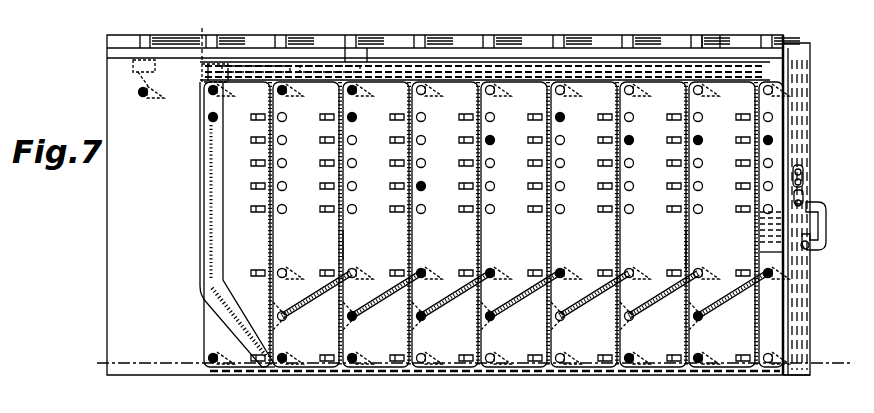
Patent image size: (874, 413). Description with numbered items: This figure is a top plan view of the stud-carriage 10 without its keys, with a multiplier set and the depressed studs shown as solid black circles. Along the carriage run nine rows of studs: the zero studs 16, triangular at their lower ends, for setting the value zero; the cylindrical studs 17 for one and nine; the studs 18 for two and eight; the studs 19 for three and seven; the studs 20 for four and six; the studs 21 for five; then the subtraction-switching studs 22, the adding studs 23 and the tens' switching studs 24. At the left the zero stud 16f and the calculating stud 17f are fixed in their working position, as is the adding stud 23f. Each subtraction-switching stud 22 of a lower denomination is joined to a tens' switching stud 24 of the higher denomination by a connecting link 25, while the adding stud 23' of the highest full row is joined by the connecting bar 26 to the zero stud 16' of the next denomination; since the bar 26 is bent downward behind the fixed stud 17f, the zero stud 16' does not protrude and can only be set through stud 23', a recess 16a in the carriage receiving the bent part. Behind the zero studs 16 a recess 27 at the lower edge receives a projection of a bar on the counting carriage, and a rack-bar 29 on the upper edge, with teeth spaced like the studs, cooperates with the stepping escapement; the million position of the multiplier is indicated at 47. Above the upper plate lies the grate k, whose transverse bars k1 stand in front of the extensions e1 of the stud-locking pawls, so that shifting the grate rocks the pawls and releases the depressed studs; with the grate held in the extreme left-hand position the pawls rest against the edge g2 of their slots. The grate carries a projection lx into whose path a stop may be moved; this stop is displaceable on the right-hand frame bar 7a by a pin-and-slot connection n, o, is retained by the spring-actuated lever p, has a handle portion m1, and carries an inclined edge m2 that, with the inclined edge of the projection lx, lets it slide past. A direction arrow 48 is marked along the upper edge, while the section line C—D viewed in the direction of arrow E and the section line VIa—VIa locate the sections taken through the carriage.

The zero stud 16' is at (228, 53).
The recess 16a is at (226, 82).
The fixed zero stud 16f is at (152, 90).
The fixed calculating stud 17f is at (208, 118).
The recess 27 is at (362, 70).
The rack-bar 29 is at (722, 46).
The direction of movement 48 is at (575, 30).
The grate k is at (592, 78).
The transverse bars k1 is at (686, 250).
The right-hand bar of the frame 7a is at (798, 58).
The zero studs 16 is at (799, 81).
The studs 17 is at (775, 117).
The studs 18 is at (775, 140).
The studs 19 is at (775, 163).
The studs 20 is at (763, 187).
The studs 21 is at (763, 210).
The handle portion m1 is at (805, 170).
The inclined edge m2 is at (800, 212).
The pin n is at (805, 178).
The slot o is at (808, 186).
The spring-actuated lever p is at (822, 240).
The projection of the grate lx is at (775, 258).
The subtraction-switching stud 22 is at (772, 277).
The adding stud 23 is at (773, 377).
The adding stud 23' is at (296, 351).
The fixed adding stud 23f is at (213, 363).
The tens' switching stud 24 is at (703, 316).
The connecting link 25 is at (304, 307).
The connecting bar 26 is at (210, 170).
The million-position digit 47 is at (349, 245).
The stud-carriage 10 is at (780, 375).
The edge of the slots g2 is at (533, 186).
The pawl extensions e1 is at (603, 186).
The section line point D is at (272, 366).
The section line point C is at (196, 35).
The arrow E is at (170, 29).
The section line VIa is at (95, 388).